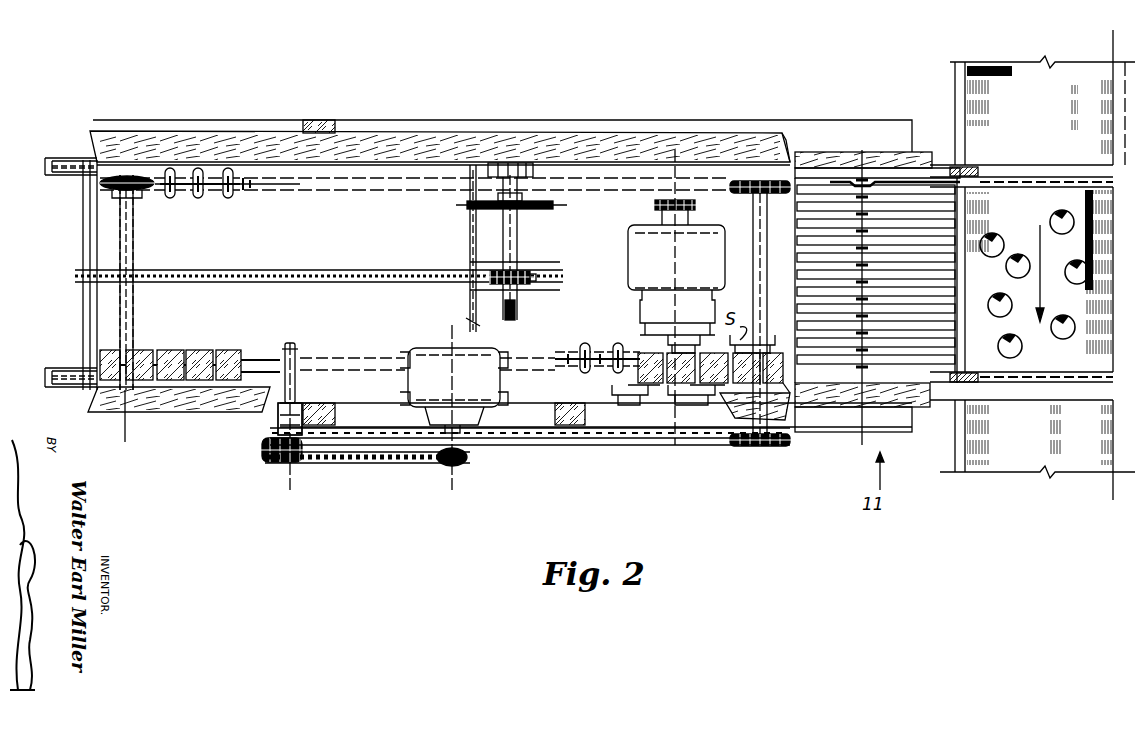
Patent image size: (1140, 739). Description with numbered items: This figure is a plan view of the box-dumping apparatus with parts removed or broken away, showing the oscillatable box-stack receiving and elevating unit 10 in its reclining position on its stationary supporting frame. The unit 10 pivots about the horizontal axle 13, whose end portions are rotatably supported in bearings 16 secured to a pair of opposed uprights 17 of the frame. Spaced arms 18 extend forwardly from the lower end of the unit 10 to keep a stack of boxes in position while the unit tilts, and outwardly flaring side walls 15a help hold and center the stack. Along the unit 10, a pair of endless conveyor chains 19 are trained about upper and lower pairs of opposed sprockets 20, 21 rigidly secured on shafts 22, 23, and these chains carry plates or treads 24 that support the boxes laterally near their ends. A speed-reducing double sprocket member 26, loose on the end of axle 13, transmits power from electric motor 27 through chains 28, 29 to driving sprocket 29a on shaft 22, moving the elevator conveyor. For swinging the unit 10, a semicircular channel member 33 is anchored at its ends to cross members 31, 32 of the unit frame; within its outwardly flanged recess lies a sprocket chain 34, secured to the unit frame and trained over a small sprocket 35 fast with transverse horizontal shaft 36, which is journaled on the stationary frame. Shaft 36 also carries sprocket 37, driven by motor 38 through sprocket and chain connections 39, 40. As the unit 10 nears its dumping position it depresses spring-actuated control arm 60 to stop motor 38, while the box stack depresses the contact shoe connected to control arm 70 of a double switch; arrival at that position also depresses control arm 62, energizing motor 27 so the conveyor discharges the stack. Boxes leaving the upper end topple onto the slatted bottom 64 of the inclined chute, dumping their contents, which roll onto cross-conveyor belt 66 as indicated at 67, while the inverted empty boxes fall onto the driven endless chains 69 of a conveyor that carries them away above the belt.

The oscillatable box-stack receiving and elevating unit 10 is at (158, 428).
The axle 13 is at (298, 360).
The outwardly flaring side walls 15a is at (213, 131).
The bearings 16 is at (298, 403).
The uprights 17 is at (330, 120).
The spaced arms 18 is at (60, 175).
The endless conveyor chains 19 is at (245, 190).
The upper sprockets 20 is at (750, 193).
The lower sprockets 21 is at (140, 190).
The upper shaft 22 is at (753, 258).
The lower shaft 23 is at (133, 236).
The plates or treads 24 is at (198, 350).
The speed-reducing double sprocket member 26 is at (262, 458).
The electric motor 27 is at (420, 350).
The chain 28 is at (410, 463).
The chain 29 is at (552, 446).
The driving sprocket 29a is at (785, 446).
The cross member 31 is at (466, 244).
The cross member 32 is at (83, 205).
The channel member 33 is at (392, 268).
The sprocket chain 34 is at (480, 285).
The small sprocket 35 is at (521, 284).
The transverse horizontal shaft 36 is at (517, 253).
The sprocket 37 is at (535, 209).
The motor 38 is at (628, 256).
The sprocket connection 39 is at (660, 212).
The chain connection 40 is at (553, 206).
The spring-actuated control arm 60 is at (655, 405).
The control arm 62 is at (712, 405).
The slatted bottom 64 is at (920, 330).
The cross-conveyor belt 66 is at (987, 66).
The dumped contents 67 is at (1025, 338).
The endless chains 69 is at (993, 170).
The control arm 70 is at (670, 342).